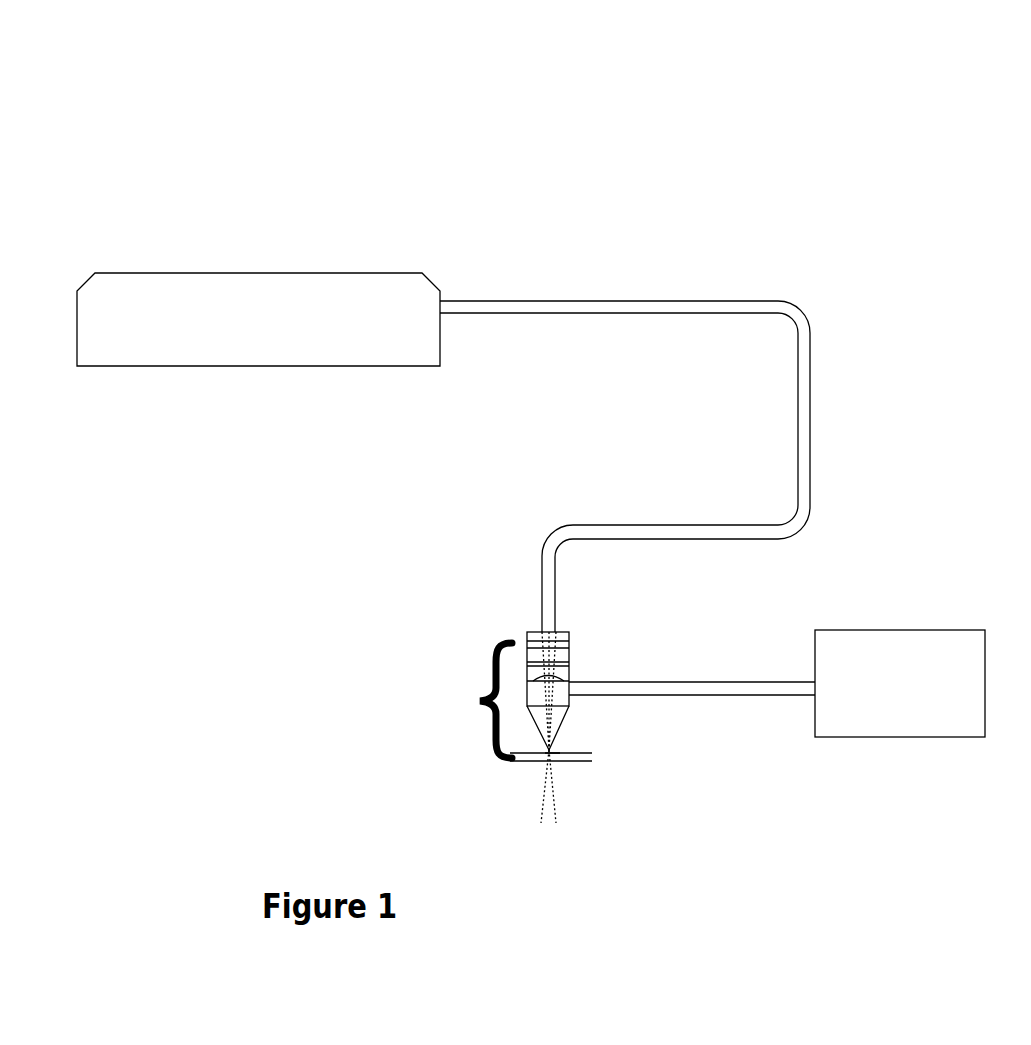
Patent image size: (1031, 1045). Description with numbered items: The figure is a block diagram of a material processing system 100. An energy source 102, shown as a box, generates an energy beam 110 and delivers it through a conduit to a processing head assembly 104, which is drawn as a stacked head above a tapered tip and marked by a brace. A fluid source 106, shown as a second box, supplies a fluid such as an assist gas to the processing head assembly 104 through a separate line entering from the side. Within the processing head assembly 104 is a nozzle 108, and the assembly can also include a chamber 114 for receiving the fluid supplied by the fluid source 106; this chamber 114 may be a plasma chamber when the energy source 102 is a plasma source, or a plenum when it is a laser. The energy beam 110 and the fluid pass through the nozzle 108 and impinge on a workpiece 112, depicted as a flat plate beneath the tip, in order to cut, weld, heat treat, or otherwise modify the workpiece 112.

The material processing system 100 is at (760, 139).
The energy source 102 is at (237, 273).
The processing head assembly 104 is at (477, 701).
The fluid source 106 is at (898, 630).
The nozzle 108 is at (568, 748).
The energy beam 110 is at (565, 798).
The workpiece 112 is at (492, 786).
The chamber 114 is at (527, 689).